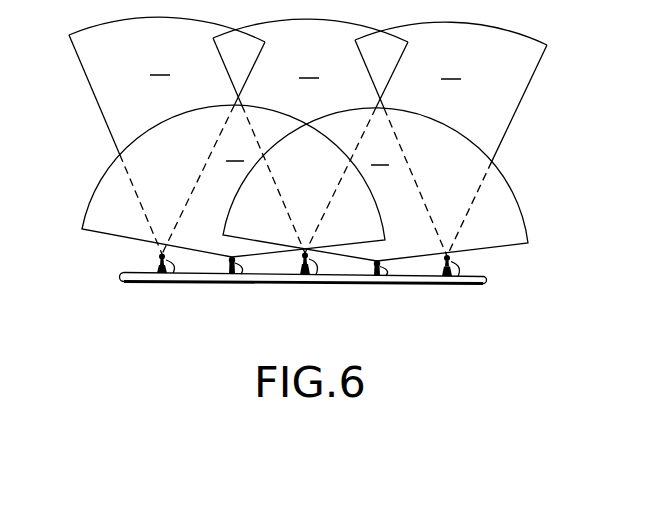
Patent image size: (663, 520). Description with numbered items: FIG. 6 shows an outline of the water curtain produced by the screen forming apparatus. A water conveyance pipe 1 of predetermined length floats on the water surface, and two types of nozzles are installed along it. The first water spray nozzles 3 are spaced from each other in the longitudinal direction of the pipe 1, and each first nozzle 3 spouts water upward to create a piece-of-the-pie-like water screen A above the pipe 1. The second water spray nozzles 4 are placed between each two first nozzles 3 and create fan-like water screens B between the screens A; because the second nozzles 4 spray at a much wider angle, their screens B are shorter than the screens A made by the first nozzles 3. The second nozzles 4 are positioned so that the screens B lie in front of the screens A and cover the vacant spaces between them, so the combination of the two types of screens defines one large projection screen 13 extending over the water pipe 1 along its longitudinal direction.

The water conveyance pipe 1 is at (471, 276).
The first water spray nozzle 3 is at (170, 274).
The second water spray nozzle 4 is at (240, 275).
The projection screen 13 is at (527, 155).